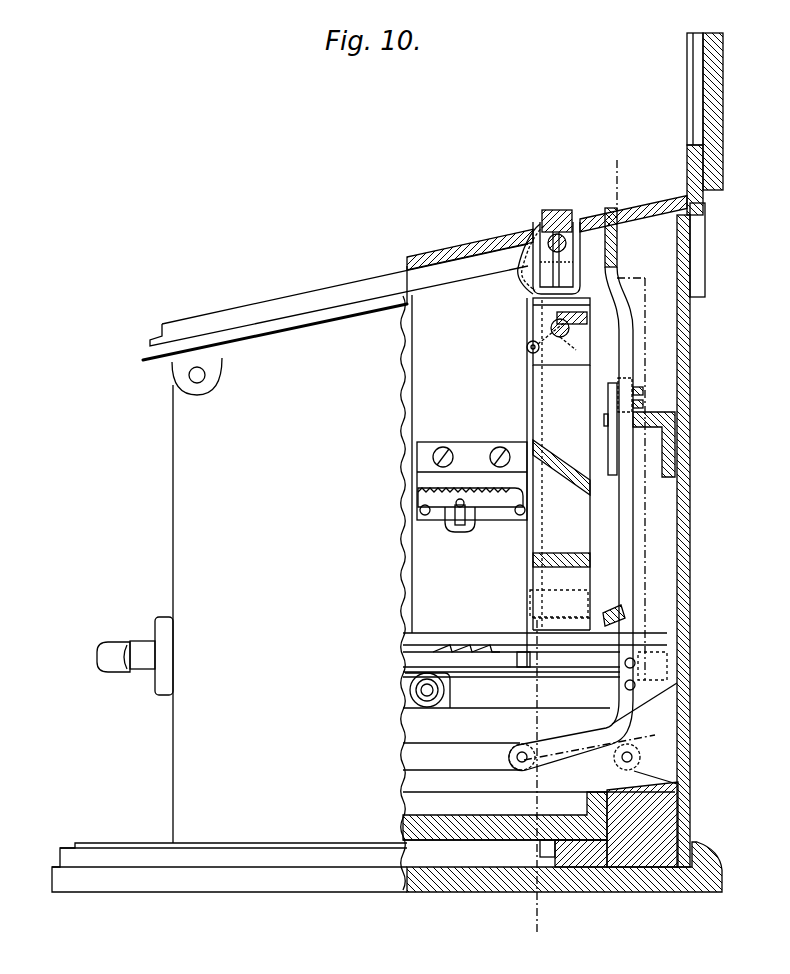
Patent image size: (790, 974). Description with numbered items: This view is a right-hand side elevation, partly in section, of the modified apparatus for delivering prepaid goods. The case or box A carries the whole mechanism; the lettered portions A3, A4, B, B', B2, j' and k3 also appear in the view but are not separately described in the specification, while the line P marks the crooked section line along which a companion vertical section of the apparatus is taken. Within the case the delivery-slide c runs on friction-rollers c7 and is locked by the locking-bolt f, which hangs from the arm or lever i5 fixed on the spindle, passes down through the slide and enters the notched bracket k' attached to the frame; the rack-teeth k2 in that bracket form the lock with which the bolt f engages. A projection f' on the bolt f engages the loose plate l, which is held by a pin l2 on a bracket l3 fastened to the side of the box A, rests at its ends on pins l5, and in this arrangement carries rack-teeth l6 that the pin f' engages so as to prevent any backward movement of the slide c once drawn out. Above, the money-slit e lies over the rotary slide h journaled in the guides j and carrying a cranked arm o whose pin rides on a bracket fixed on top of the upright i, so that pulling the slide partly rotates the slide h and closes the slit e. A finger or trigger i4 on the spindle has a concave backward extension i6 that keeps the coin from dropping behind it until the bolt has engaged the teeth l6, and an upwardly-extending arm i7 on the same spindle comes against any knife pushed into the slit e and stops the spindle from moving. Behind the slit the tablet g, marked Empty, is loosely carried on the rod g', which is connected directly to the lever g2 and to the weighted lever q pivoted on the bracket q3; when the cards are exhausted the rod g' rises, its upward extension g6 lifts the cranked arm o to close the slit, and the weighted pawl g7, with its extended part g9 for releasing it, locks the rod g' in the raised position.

The case or box A is at (387, 462).
The frame bottom web A3 is at (505, 816).
The frame bottom block A4 is at (642, 824).
The inclined table B is at (335, 302).
The table top plate B' is at (547, 233).
The table lug B2 is at (208, 380).
The money-slit e is at (557, 210).
The rotary slide h is at (562, 250).
The guides j is at (562, 258).
The bracket lower box j' is at (568, 327).
The slot k3 is at (552, 272).
The upwardly-extending arm i7 is at (518, 282).
The upright i is at (553, 482).
The finger or trigger i4 is at (562, 324).
The arm or lever i5 is at (527, 349).
The backward extension i6 is at (560, 340).
The tablet g is at (622, 239).
The rod g' is at (593, 525).
The weighted pawl g7 is at (618, 402).
The lever q is at (643, 402).
The bracket q3 is at (677, 445).
The extended part g9 is at (608, 460).
The upward extension g6 is at (613, 610).
The lever g2 is at (461, 756).
The cranked arm o is at (639, 407).
The center line P is at (544, 786).
The loose plate l is at (497, 500).
The pin l2 is at (466, 508).
The bracket l3 is at (435, 466).
The pins l5 is at (472, 525).
The rack-teeth l6 is at (484, 466).
The projection f' is at (561, 474).
The locking-bolt f is at (546, 555).
The delivery-slide c is at (535, 629).
The rack-teeth k2 is at (480, 650).
The bracket k' is at (511, 688).
The friction-rollers c7 is at (445, 695).